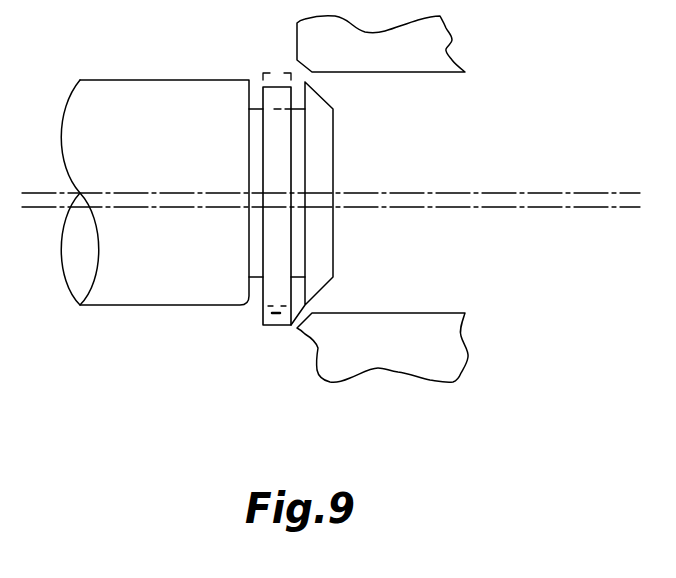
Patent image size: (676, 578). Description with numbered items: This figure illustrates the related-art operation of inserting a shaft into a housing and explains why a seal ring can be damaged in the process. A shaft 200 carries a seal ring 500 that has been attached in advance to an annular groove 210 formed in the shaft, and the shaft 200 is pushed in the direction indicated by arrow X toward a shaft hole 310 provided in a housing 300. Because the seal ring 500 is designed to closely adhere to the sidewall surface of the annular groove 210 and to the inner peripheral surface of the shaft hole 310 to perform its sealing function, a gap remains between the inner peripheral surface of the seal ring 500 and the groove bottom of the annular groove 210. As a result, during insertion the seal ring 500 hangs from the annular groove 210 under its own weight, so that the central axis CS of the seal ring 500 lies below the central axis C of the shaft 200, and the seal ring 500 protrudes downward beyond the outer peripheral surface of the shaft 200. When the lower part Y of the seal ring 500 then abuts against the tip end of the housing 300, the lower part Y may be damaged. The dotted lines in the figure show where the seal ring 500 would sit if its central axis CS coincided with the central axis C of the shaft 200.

The shaft 200 is at (155, 192).
The annular groove 210 is at (256, 307).
The seal ring 500 is at (262, 100).
The housing 300 is at (379, 232).
The shaft hole 310 is at (390, 73).
The insertion direction arrow X is at (404, 178).
The lower part of the seal ring Y is at (297, 330).
The central axis of the shaft C is at (515, 193).
The central axis of the seal ring CS is at (585, 207).